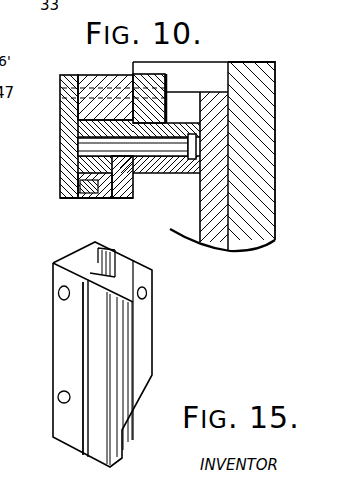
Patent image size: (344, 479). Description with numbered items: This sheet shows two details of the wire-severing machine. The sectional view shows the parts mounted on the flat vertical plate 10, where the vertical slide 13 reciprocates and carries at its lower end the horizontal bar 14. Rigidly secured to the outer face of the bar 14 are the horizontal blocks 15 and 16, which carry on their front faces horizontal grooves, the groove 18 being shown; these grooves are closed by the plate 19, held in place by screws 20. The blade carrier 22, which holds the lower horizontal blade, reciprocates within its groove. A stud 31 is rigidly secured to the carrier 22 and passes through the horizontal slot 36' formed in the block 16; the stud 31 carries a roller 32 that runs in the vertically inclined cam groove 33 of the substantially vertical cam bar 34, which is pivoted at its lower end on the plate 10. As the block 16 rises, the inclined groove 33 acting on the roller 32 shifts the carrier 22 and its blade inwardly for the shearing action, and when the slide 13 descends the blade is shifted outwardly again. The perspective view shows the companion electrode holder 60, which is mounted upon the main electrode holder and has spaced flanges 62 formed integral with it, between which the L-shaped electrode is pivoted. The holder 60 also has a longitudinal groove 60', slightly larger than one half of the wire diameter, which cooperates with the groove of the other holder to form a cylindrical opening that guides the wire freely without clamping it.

In FIG. 10, the vertical plate 10 is at (255, 252).
In FIG. 10, the vertical slide 13 is at (201, 66).
In FIG. 10, the horizontal bar 14 is at (133, 74).
In FIG. 10, the block 15 is at (168, 81).
In FIG. 10, the block 16 is at (85, 75).
In FIG. 10, the horizontal groove 18 is at (110, 192).
In FIG. 10, the plate 19 is at (62, 75).
In FIG. 10, the screw 20 is at (62, 90).
In FIG. 10, the blade carrier 22 is at (82, 174).
In FIG. 10, the stud 31 is at (87, 148).
In FIG. 10, the roller 32 is at (182, 173).
In FIG. 10, the cam groove 33 is at (185, 232).
In FIG. 10, the cam bar 34 is at (222, 249).
In FIG. 10, the horizontal slot 36' is at (147, 206).
In FIG. 15, the companion electrode holder 60 is at (85, 354).
In FIG. 15, the longitudinal groove 60' is at (52, 368).
In FIG. 15, the flange 62 is at (93, 248).